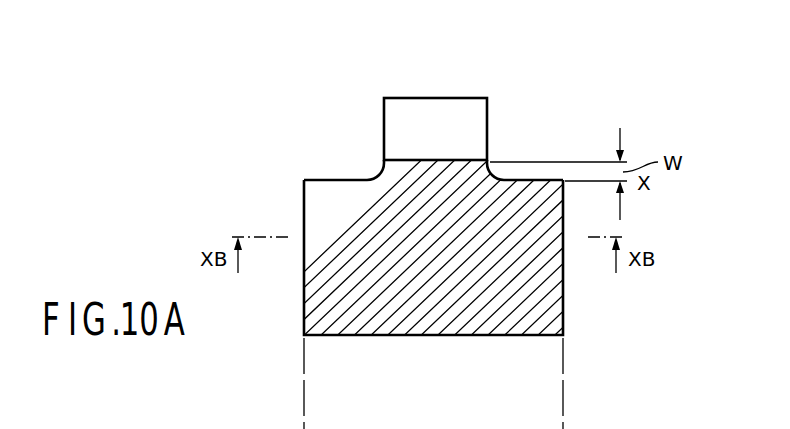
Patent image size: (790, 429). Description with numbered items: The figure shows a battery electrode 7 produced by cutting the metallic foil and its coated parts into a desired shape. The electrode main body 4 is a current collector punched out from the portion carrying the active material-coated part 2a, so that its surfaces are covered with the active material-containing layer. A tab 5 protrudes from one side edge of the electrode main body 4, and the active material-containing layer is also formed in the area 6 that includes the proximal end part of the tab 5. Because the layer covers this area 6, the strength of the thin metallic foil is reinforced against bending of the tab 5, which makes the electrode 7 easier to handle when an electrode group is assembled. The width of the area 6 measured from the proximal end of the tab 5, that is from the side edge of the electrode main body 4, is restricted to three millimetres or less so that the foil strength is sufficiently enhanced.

The active material-coated part 2a is at (430, 255).
The electrode main body 4 is at (300, 182).
The tab 5 is at (440, 108).
The area including the proximal end part of the tab 6 is at (300, 160).
The electrode 7 is at (581, 313).